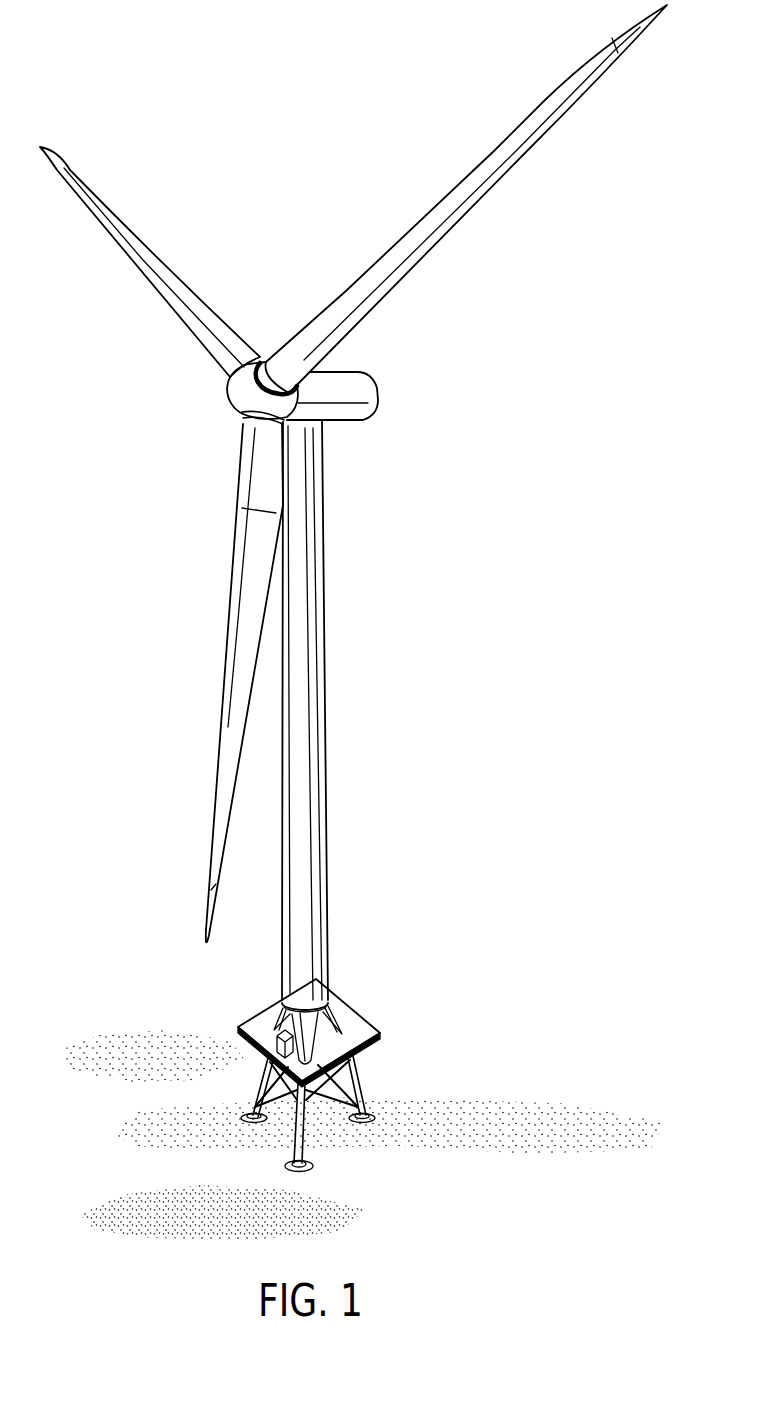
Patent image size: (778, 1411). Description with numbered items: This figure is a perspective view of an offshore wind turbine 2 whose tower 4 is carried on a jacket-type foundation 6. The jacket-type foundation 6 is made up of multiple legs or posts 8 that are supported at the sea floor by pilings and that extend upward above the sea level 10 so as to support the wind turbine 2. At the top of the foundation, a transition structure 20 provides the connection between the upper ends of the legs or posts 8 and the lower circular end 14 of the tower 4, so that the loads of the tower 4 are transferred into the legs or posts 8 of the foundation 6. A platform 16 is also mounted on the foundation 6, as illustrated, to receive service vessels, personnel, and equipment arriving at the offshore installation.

The wind turbine 2 is at (104, 107).
The tower 4 is at (336, 722).
The jacket-type foundation 6 is at (398, 1031).
The legs or posts 8 is at (363, 1092).
The sea level 10 is at (140, 1050).
The lower circular end 14 is at (303, 972).
The platform 16 is at (348, 1017).
The transition structure 20 is at (336, 998).